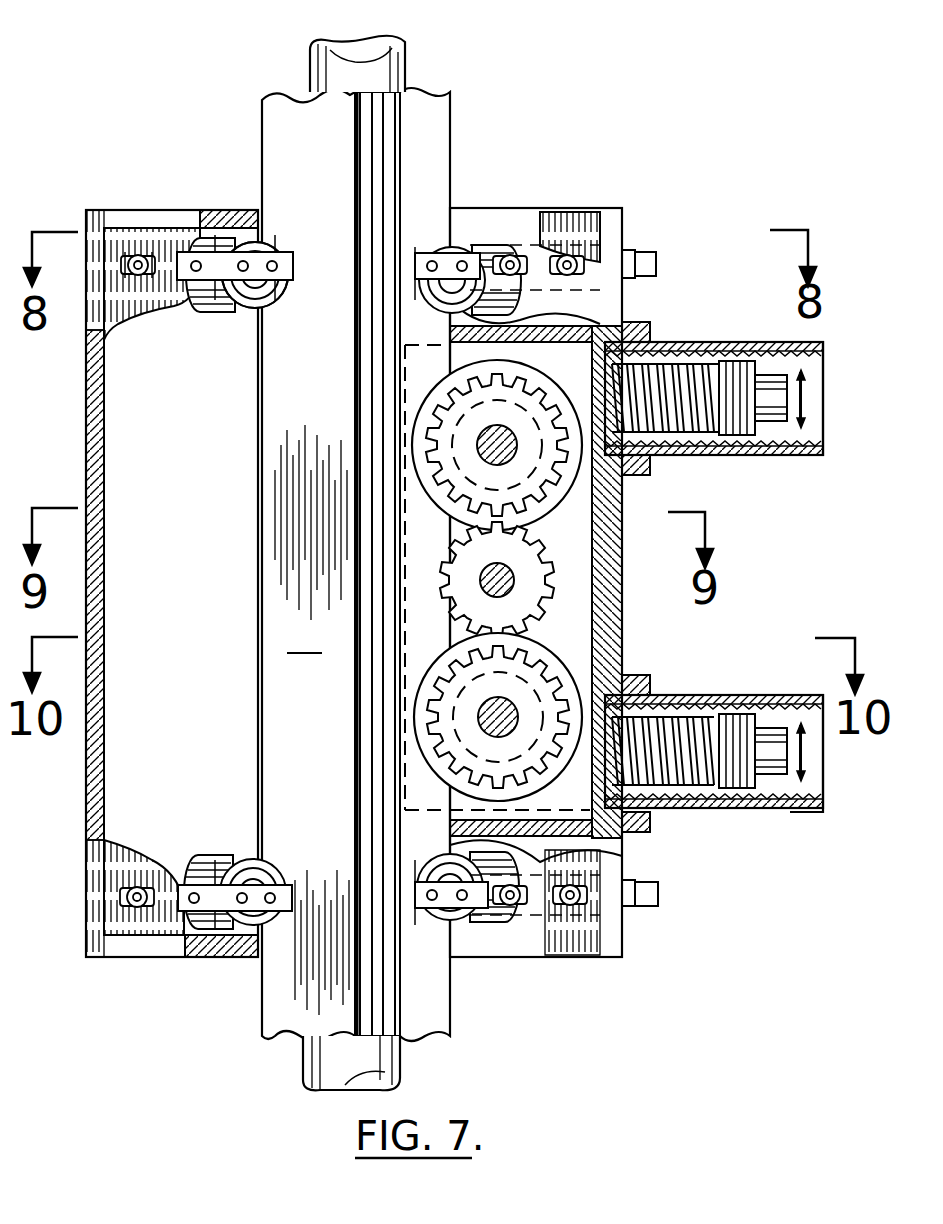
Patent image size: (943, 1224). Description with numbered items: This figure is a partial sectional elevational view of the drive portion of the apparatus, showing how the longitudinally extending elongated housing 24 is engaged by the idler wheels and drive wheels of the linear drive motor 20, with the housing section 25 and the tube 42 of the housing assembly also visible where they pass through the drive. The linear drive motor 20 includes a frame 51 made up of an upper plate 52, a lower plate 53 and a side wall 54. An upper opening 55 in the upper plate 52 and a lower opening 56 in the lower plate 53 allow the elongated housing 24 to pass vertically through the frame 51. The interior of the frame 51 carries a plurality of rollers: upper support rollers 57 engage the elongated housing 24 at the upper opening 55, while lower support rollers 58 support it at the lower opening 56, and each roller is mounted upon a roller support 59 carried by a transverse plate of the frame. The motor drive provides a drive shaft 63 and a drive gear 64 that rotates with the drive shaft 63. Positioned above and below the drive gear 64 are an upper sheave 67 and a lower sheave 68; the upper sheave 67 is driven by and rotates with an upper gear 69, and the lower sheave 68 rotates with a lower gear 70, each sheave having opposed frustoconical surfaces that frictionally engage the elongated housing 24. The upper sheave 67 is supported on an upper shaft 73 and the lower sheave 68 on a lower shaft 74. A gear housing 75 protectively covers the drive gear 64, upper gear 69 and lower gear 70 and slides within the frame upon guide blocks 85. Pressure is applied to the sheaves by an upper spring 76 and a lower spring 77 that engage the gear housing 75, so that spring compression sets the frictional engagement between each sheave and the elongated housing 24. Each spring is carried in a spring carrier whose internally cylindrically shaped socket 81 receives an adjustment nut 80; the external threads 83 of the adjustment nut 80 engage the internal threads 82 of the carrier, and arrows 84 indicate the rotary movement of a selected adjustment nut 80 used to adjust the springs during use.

The linear drive motor 20 is at (88, 426).
The elongated housing 24 is at (443, 110).
The guide rail 25 is at (247, 1025).
The tube 42 is at (392, 72).
The frame 51 is at (110, 756).
The upper plate 52 is at (212, 206).
The lower plate 53 is at (202, 960).
The side wall 54 is at (94, 786).
The upper opening 55 is at (257, 198).
The lower opening 56 is at (452, 960).
The upper support rollers 57 is at (233, 318).
The lower support rollers 58 is at (232, 840).
The roller support 59 is at (192, 306).
The drive shaft 63 is at (522, 562).
The drive gear 64 is at (562, 582).
The upper sheave 67 is at (416, 420).
The lower sheave 68 is at (420, 730).
The upper gear 69 is at (418, 452).
The lower gear 70 is at (616, 654).
The upper shaft 73 is at (648, 346).
The lower shaft 74 is at (482, 714).
The gear housing 75 is at (612, 326).
The upper spring 76 is at (728, 352).
The lower spring 77 is at (718, 696).
The adjustment nut 80 is at (800, 352).
The socket 81 is at (828, 386).
The internal threads 82 is at (828, 430).
The external threads 83 is at (800, 346).
The arrows 84 is at (782, 454).
The guide blocks 85 is at (522, 262).